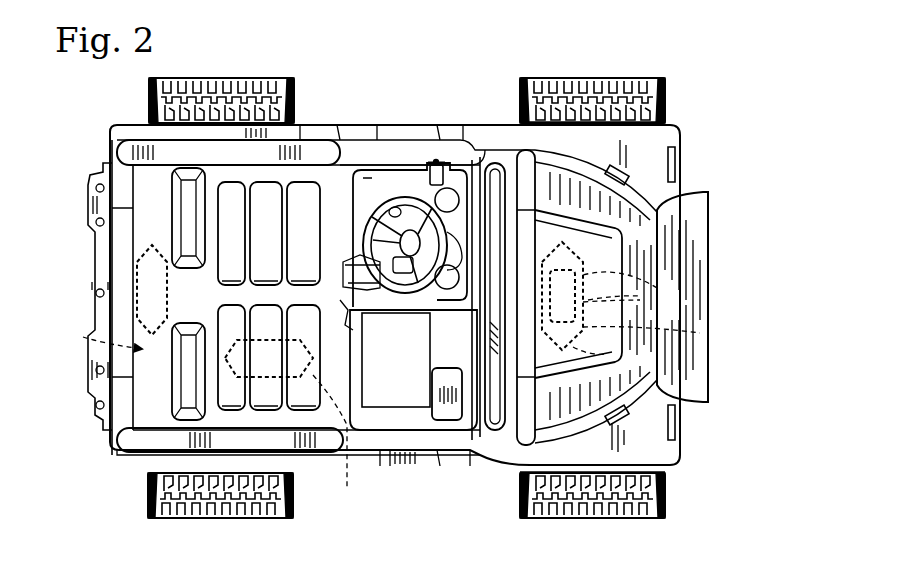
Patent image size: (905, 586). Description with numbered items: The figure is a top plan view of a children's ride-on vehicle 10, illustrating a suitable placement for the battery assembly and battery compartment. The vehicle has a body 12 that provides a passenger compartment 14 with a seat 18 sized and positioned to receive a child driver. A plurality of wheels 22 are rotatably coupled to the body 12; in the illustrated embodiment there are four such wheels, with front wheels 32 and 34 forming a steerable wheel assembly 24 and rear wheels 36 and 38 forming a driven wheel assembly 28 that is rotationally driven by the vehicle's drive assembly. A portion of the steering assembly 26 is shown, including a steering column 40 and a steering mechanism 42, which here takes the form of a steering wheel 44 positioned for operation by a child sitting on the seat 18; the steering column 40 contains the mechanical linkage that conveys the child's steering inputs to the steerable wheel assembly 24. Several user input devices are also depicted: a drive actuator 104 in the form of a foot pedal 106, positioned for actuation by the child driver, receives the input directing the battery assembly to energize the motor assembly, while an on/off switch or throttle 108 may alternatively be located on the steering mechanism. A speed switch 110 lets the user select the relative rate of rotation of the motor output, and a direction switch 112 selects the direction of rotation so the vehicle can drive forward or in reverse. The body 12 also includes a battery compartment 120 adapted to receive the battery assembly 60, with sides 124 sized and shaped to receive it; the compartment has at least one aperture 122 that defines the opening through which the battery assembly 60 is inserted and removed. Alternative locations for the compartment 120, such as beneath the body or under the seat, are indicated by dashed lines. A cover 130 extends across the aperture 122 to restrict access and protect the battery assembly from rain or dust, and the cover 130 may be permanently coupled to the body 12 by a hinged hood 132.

The children's ride-on vehicle 10 is at (750, 168).
The body 12 is at (712, 258).
The passenger compartment 14 is at (396, 155).
The seat 18 is at (188, 192).
The wheels 22 is at (690, 98).
The steerable wheel assembly 24 is at (628, 77).
The steering assembly 26 is at (463, 257).
The driven wheel assembly 28 is at (256, 76).
The front wheel 32 is at (548, 80).
The front wheel 34 is at (565, 518).
The rear wheel 36 is at (173, 80).
The rear wheel 38 is at (195, 520).
The steering column 40 is at (454, 246).
The steering mechanism 42 is at (378, 292).
The steering wheel 44 is at (410, 306).
The battery assembly 60 is at (580, 277).
The drive actuator 104 is at (388, 230).
The foot pedal 106 is at (390, 260).
The on/off switch or throttle 108 is at (392, 213).
The speed switch 110 is at (436, 160).
The direction switch 112 is at (445, 160).
The battery compartment 120 is at (717, 290).
The aperture 122 is at (565, 258).
The sides 124 is at (700, 333).
The cover 130 is at (642, 360).
The hinged hood 132 is at (627, 373).